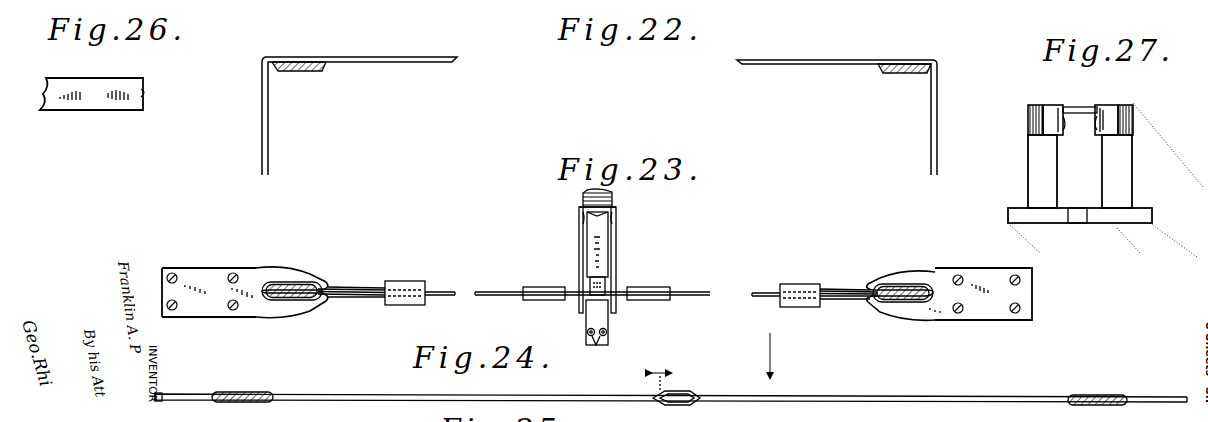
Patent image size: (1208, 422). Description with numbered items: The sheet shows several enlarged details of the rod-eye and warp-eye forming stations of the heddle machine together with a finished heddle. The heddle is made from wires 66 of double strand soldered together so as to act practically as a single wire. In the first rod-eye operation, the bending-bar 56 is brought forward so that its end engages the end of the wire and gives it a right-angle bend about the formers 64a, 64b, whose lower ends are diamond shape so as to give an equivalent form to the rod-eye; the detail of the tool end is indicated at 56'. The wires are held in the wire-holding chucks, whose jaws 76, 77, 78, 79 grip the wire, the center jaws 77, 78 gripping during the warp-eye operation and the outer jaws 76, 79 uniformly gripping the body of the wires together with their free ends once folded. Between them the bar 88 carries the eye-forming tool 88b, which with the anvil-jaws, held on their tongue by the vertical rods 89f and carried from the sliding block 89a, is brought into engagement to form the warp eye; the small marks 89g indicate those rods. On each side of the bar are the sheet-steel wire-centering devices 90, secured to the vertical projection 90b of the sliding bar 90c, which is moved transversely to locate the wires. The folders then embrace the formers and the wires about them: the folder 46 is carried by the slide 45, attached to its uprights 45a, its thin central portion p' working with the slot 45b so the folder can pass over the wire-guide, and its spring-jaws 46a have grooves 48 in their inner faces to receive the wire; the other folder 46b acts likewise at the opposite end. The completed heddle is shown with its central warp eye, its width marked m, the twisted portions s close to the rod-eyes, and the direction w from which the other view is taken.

In FIG. 26, the bending-bar 56 is at (91, 94).
In FIG. 26, the plate notch 56' is at (158, 82).
In FIG. 22, the wires 66 is at (390, 57).
In FIG. 23, the wires 66 is at (445, 297).
In FIG. 24, the wires 66 is at (402, 394).
In FIG. 22, the lower end of former 64a is at (296, 70).
In FIG. 23, the lower end of former 64a is at (292, 284).
In FIG. 22, the former 64b is at (902, 74).
In FIG. 23, the former 64b is at (915, 288).
In FIG. 27, the slide 45 is at (1016, 208).
In FIG. 27, the uprights of the slide 45a is at (1080, 171).
In FIG. 27, the slot of slide 45b is at (1077, 223).
In FIG. 27, the folder 46 is at (1100, 107).
In FIG. 23, the folder 46 is at (209, 292).
In FIG. 27, the spring-jaws 46a is at (1030, 122).
In FIG. 23, the spring-jaws 46a is at (306, 270).
In FIG. 23, the other folder 46b is at (981, 294).
In FIG. 27, the grooves 48 is at (1080, 124).
In FIG. 27, the central portion of folder p' is at (1080, 97).
In FIG. 23, the chuck jaw 76 is at (412, 281).
In FIG. 23, the chuck jaw 77 is at (541, 287).
In FIG. 23, the chuck jaw 78 is at (660, 282).
In FIG. 23, the chuck jaw 79 is at (796, 284).
In FIG. 23, the bar 88 is at (597, 244).
In FIG. 23, the eye-forming tool 88b is at (606, 290).
In FIG. 23, the sliding block 89a is at (588, 318).
In FIG. 23, the vertical rods 89f is at (597, 346).
In FIG. 23, the rivets 89g is at (609, 325).
In FIG. 23, the wire-centering devices 90 is at (617, 262).
In FIG. 23, the vertical projection 90b is at (580, 212).
In FIG. 23, the sliding bar 90c is at (583, 198).
In FIG. 24, the splice s is at (252, 392).
In FIG. 24, the eye width m is at (659, 373).
In FIG. 24, the warp direction w is at (778, 354).
In FIG. 24, the warp-eye warp eye is at (680, 402).